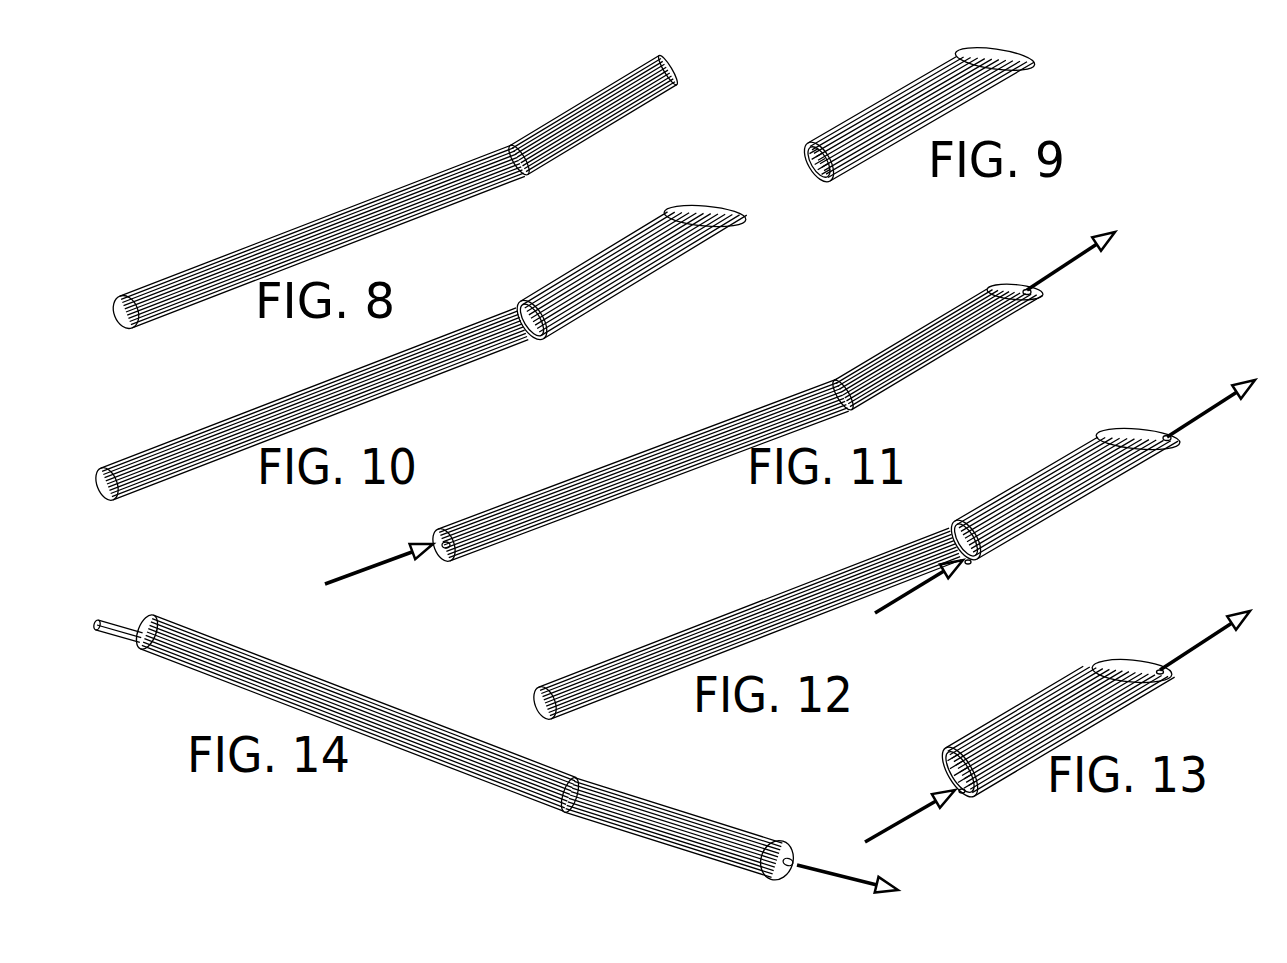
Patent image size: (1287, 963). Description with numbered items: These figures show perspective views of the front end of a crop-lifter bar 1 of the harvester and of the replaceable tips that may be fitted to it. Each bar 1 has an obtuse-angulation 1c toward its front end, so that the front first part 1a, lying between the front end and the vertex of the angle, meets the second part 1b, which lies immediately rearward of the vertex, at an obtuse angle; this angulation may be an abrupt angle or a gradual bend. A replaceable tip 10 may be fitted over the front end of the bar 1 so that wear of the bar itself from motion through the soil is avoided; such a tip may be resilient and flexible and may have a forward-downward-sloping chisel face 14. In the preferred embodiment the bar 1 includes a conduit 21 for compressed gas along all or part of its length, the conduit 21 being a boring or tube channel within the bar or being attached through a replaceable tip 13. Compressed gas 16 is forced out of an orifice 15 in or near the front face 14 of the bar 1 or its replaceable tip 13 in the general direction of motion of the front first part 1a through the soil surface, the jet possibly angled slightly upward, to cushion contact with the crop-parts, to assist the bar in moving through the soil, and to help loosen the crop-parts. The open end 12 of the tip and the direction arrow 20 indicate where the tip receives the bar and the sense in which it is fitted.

In FIG. 8, the crop-lifter bar 1 is at (395, 182).
In FIG. 10, the crop-lifter bar 1 is at (319, 410).
In FIG. 11, the crop-lifter bar 1 is at (736, 393).
In FIG. 12, the crop-lifter bar 1 is at (933, 533).
In FIG. 14, the crop-lifter bar 1 is at (655, 843).
In FIG. 8, the front first part 1a is at (577, 123).
In FIG. 8, the second part 1b is at (197, 262).
In FIG. 8, the obtuse-angulation 1c is at (574, 161).
In FIG. 11, the obtuse-angulation 1c is at (845, 407).
In FIG. 9, the replaceable tip 10 is at (977, 159).
In FIG. 10, the replaceable tip 10 is at (634, 293).
In FIG. 9, the open end of sleeve 12 is at (822, 180).
In FIG. 10, the open end of sleeve 12 is at (531, 296).
In FIG. 12, the open end of sleeve 12 is at (965, 517).
In FIG. 13, the open end of sleeve 12 is at (962, 740).
In FIG. 12, the replaceable tip 13 is at (1069, 452).
In FIG. 13, the replaceable tip 13 is at (1064, 684).
In FIG. 9, the forward-downward-sloping chisel face 14 is at (1002, 60).
In FIG. 10, the forward-downward-sloping chisel face 14 is at (711, 222).
In FIG. 11, the forward-downward-sloping chisel face 14 is at (987, 290).
In FIG. 12, the forward-downward-sloping chisel face 14 is at (1145, 447).
In FIG. 13, the forward-downward-sloping chisel face 14 is at (1115, 668).
In FIG. 11, the orifice 15 is at (1025, 288).
In FIG. 12, the orifice 15 is at (1167, 433).
In FIG. 13, the orifice 15 is at (1162, 670).
In FIG. 14, the orifice 15 is at (788, 853).
In FIG. 11, the compressed gas 16 is at (1065, 272).
In FIG. 12, the compressed gas 16 is at (1215, 410).
In FIG. 13, the compressed gas 16 is at (1205, 647).
In FIG. 14, the compressed gas 16 is at (855, 885).
In FIG. 11, the insertion direction arrow 20 is at (325, 583).
In FIG. 12, the insertion direction arrow 20 is at (875, 617).
In FIG. 13, the insertion direction arrow 20 is at (865, 842).
In FIG. 11, the conduit 21 is at (458, 547).
In FIG. 12, the conduit 21 is at (968, 567).
In FIG. 13, the conduit 21 is at (963, 795).
In FIG. 14, the conduit 21 is at (96, 632).